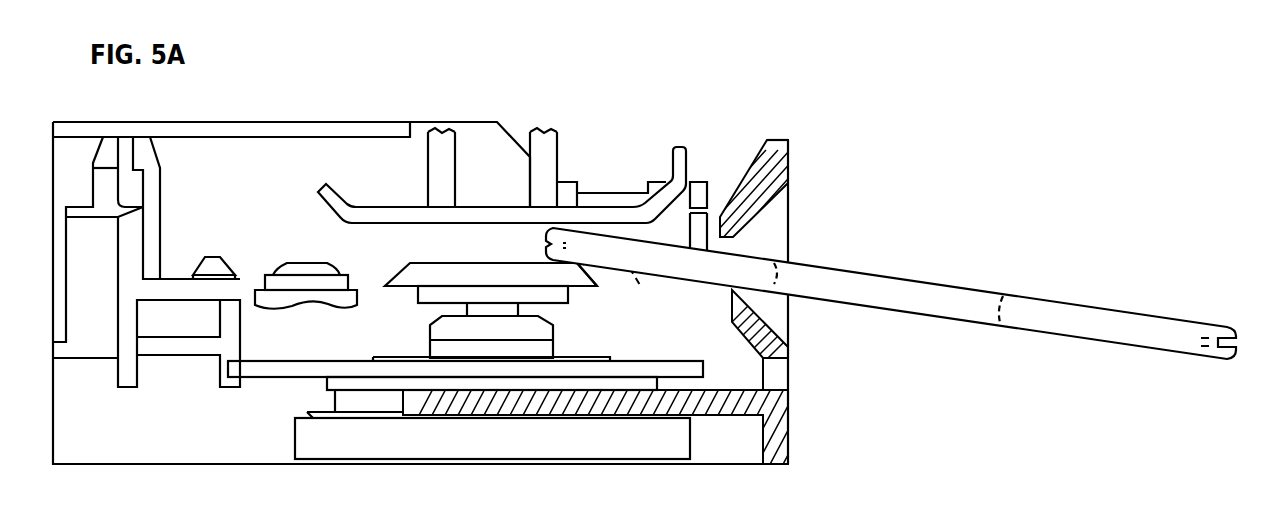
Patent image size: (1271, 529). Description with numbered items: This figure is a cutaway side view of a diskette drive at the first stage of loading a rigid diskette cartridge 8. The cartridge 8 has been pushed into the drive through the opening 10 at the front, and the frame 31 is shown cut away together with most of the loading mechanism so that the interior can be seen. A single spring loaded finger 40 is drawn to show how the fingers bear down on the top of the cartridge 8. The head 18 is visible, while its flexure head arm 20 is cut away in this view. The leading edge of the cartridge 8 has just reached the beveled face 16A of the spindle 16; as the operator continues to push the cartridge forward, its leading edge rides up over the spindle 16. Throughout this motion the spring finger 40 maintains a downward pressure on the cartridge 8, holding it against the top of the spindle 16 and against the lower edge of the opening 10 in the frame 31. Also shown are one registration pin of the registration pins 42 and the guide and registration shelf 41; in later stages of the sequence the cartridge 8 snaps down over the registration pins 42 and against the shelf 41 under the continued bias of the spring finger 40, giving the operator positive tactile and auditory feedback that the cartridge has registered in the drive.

The cartridge 8 is at (1018, 303).
The opening 10 is at (742, 243).
The spindle 16 is at (566, 300).
The beveled face 16A is at (590, 275).
The head 18 is at (318, 271).
The flexure head arm 20 is at (331, 304).
The frame 31 is at (793, 148).
The spring loaded finger 40 is at (673, 158).
The guide and registration shelf 41 is at (640, 280).
The registration pins 42 is at (220, 268).